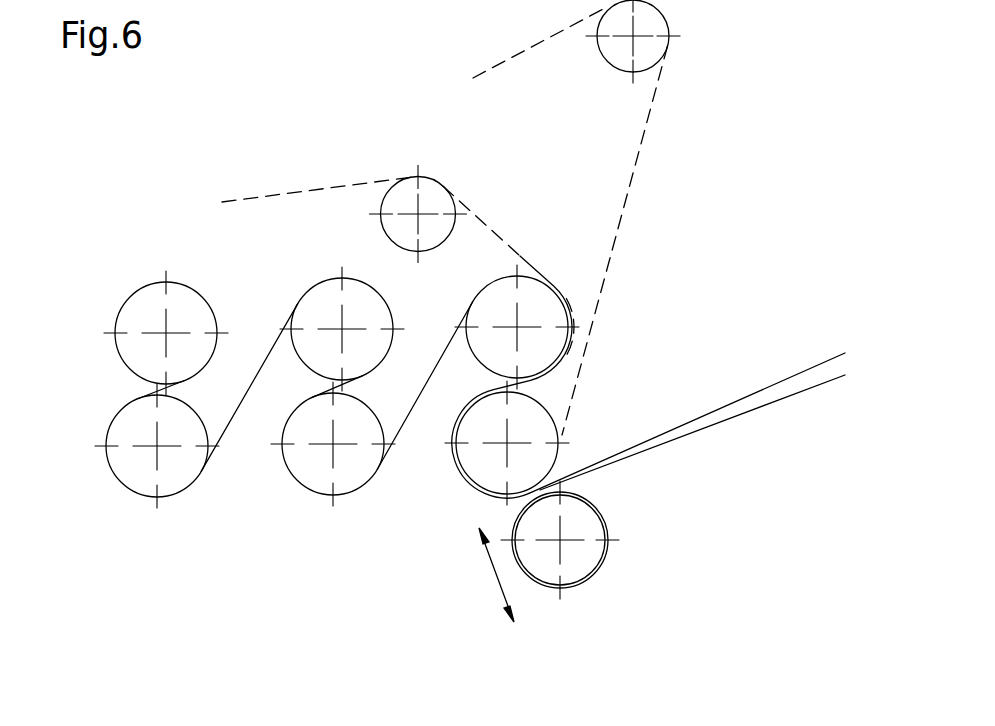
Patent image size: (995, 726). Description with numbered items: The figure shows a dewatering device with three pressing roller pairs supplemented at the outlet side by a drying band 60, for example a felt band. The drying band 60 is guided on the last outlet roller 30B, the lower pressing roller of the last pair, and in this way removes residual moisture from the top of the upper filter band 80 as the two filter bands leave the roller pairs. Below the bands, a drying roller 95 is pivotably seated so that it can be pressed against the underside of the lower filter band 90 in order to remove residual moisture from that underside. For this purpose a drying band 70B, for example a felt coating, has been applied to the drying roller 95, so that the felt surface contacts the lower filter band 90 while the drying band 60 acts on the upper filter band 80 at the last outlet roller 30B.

The last outlet roller 30B is at (541, 434).
The drying band 60 is at (620, 230).
The drying band 70B is at (608, 528).
The upper filter band 80 is at (807, 368).
The lower filter band 90 is at (810, 390).
The drying roller 95 is at (577, 557).